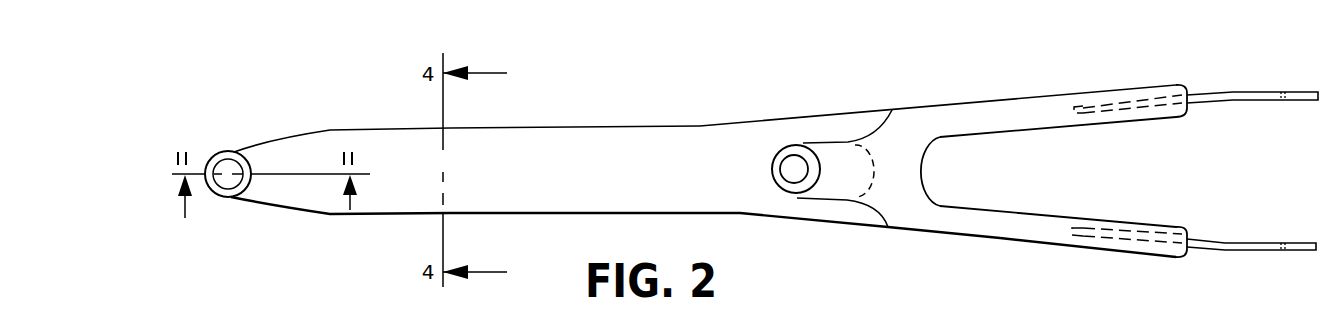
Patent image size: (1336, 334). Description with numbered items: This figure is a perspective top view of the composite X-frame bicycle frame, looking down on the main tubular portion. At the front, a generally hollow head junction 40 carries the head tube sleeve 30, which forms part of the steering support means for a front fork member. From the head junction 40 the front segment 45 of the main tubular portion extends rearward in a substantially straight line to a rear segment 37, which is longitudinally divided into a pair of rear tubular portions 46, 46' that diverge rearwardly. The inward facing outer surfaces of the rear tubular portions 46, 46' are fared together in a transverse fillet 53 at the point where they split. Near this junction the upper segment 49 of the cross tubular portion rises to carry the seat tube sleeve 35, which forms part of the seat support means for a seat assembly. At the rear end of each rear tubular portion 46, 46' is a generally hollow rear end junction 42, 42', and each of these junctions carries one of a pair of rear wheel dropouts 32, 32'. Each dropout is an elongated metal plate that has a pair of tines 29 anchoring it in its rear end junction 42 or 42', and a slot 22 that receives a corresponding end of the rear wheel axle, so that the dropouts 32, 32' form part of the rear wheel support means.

The slot 22 is at (1277, 238).
The tines 29 is at (1103, 230).
The head tube sleeve 30 is at (227, 162).
The rear wheel dropout 32 is at (1251, 267).
The rear wheel dropout 32' is at (1252, 73).
The seat tube sleeve 35 is at (788, 162).
The rear segment 37 is at (915, 248).
The head junction 40 is at (258, 180).
The rear end junction 42 is at (1139, 261).
The rear end junction 42' is at (1139, 78).
The front segment 45 is at (592, 143).
The rear tubular portion 46 is at (1057, 248).
The rear tubular portion 46' is at (938, 95).
The upper segment 49 is at (837, 152).
The transverse fillet 53 is at (922, 157).